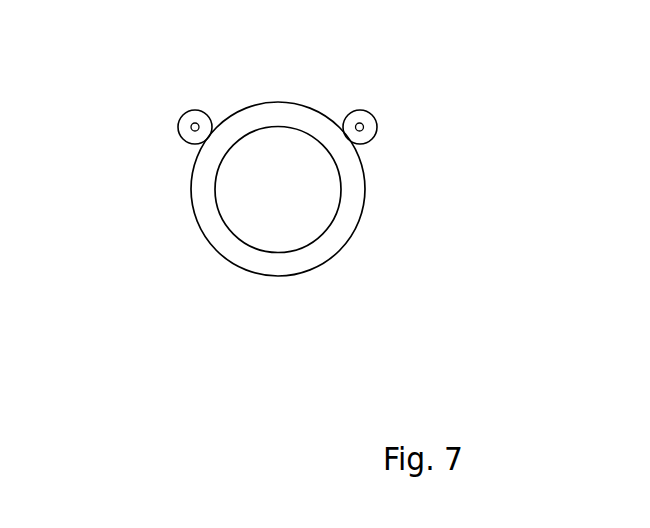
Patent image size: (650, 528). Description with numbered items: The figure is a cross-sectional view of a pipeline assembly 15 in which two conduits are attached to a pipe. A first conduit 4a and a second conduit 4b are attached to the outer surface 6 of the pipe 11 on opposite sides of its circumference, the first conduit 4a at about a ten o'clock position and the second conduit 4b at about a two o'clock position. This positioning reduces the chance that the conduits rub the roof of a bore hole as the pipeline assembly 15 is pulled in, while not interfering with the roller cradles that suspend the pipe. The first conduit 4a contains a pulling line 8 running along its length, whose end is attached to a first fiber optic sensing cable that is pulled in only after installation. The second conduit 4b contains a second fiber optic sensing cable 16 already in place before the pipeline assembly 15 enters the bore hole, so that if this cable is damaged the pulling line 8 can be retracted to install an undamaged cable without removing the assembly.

The pipeline assembly 15 is at (96, 90).
The first conduit 4a is at (184, 114).
The second conduit 4b is at (369, 112).
The pulling line 8 is at (193, 131).
The second fiber optic sensing cable 16 is at (362, 131).
The outer surface 6 is at (335, 259).
The pipe 11 is at (232, 250).